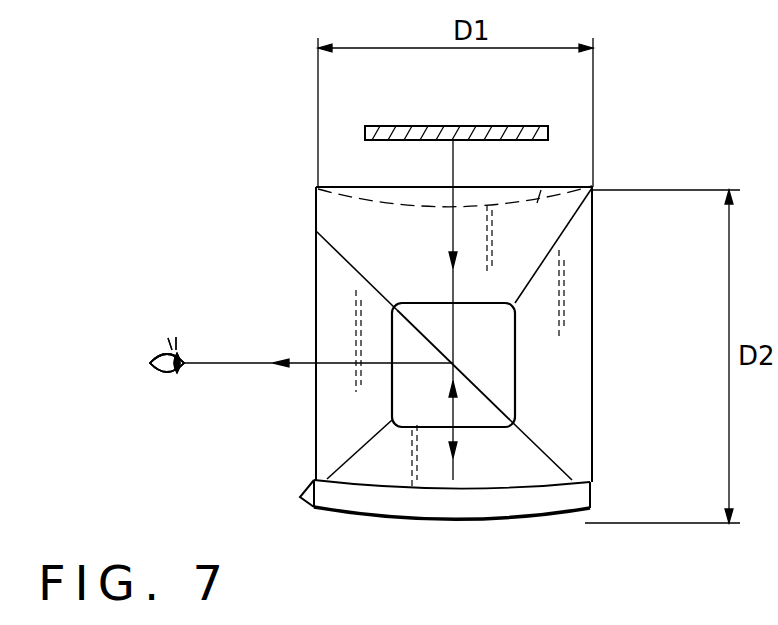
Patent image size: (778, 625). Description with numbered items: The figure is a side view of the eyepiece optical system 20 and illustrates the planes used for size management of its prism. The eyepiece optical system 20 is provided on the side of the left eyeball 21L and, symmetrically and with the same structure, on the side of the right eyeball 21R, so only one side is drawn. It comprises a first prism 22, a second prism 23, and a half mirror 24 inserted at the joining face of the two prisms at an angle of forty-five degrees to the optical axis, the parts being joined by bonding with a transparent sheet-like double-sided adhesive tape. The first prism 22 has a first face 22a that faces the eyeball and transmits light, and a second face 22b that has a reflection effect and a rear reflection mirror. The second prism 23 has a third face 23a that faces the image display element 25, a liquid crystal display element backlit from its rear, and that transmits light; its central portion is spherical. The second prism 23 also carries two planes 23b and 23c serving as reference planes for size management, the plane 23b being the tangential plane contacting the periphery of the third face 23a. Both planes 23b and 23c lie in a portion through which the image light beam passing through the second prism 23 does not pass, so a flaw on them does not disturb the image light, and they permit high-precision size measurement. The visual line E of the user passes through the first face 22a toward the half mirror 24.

The eyepiece optical system 20 is at (592, 260).
The left eyeball 21L is at (178, 384).
The right eyeball 21R is at (167, 363).
The first prism 22 is at (316, 261).
The first face 22a is at (316, 297).
The second face 22b is at (428, 488).
The second prism 23 is at (592, 395).
The third face 23a is at (550, 183).
The plane 23b is at (345, 187).
The plane 23c is at (592, 450).
The half mirror 24 is at (477, 387).
The image display element 25 is at (456, 126).
The visual line E is at (213, 363).